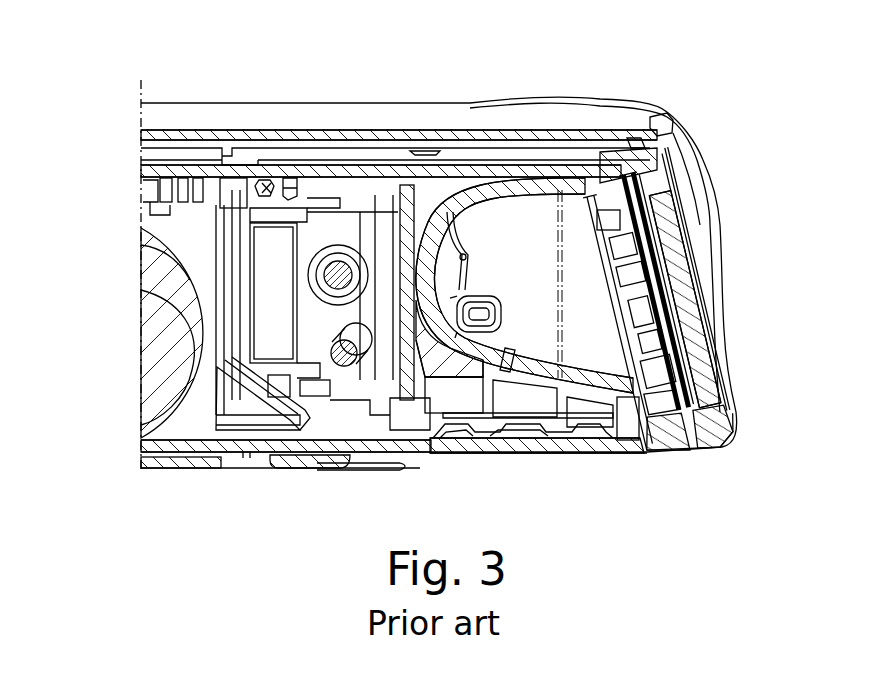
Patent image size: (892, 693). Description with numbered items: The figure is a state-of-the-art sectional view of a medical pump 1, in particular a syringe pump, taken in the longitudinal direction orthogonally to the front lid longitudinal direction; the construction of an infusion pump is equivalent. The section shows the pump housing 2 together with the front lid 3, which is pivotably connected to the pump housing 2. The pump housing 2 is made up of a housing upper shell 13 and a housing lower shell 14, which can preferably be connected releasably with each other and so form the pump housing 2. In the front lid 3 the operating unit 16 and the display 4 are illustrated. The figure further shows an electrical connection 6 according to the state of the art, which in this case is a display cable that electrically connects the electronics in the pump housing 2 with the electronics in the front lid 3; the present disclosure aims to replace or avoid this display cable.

The medical pump 1 is at (608, 72).
The pump housing 2 is at (134, 122).
The front lid 3 is at (727, 456).
The display 4 is at (722, 342).
The electrical connection 6 is at (292, 432).
The housing upper shell 13 is at (320, 124).
The housing lower shell 14 is at (487, 453).
The operating unit 16 is at (700, 368).